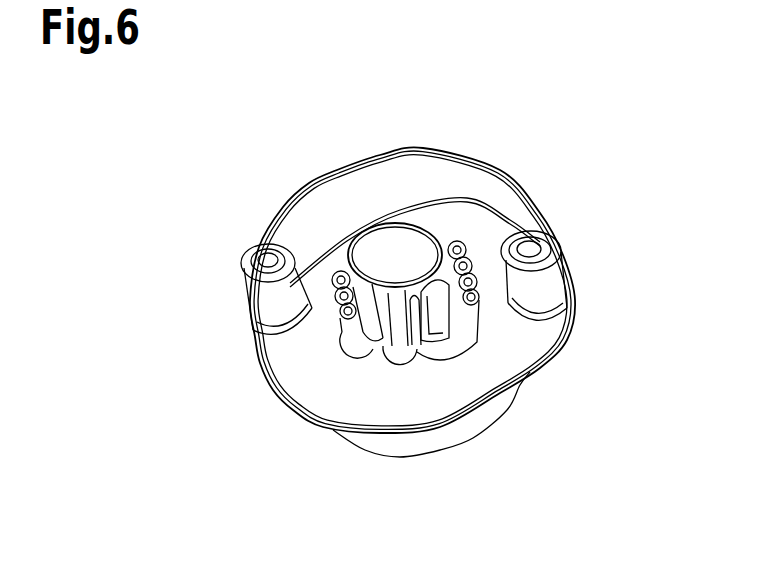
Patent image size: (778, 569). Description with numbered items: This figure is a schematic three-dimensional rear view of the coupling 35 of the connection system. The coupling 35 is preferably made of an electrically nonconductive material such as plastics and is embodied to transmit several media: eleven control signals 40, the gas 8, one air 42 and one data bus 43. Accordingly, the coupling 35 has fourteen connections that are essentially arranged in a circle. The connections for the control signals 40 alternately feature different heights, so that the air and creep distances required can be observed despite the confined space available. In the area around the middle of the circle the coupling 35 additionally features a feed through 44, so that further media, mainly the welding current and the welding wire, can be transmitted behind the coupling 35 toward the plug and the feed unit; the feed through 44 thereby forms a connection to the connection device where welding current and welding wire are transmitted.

The coupling 35 is at (614, 130).
The control signals 40 is at (337, 275).
The feed through 44 is at (394, 250).
The air 42 is at (352, 348).
The gas 8 is at (402, 350).
The data bus 43 is at (441, 315).